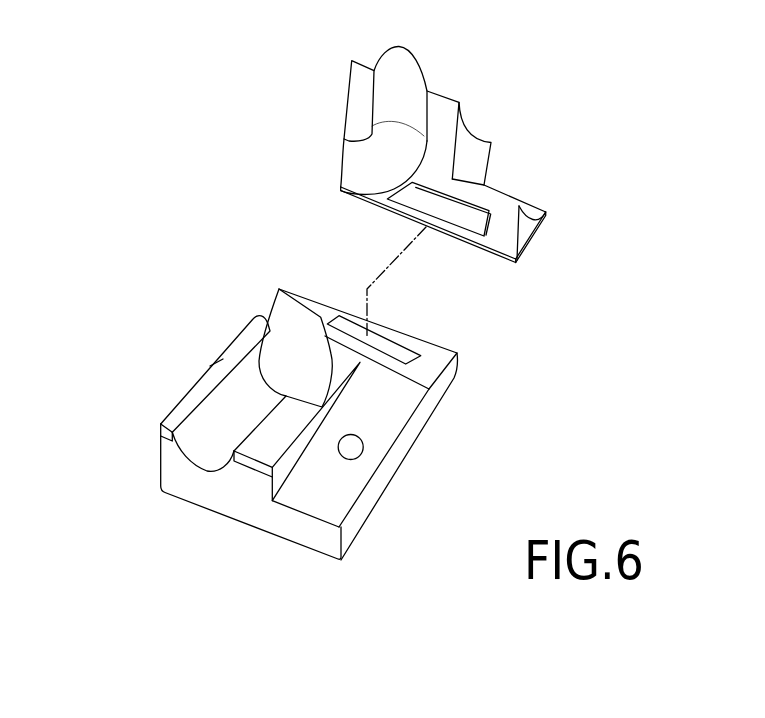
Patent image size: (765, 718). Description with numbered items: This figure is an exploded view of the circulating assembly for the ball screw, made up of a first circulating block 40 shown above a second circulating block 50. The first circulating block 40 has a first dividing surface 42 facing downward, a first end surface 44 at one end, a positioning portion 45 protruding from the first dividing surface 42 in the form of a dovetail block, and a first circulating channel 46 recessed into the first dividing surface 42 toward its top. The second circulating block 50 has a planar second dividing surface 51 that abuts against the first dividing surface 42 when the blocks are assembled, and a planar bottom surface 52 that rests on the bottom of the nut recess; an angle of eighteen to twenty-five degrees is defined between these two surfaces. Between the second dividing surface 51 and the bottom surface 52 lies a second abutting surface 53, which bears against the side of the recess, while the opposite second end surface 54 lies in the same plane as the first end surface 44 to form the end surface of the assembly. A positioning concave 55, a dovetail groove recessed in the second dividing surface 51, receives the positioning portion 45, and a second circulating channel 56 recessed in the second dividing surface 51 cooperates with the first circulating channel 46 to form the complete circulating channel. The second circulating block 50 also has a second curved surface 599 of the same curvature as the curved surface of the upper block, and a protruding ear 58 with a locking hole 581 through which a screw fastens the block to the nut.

The first circulating block 40 is at (473, 172).
The first dividing surface 42 is at (445, 111).
The first end surface 44 is at (535, 224).
The positioning portion 45 is at (463, 221).
The first circulating channel 46 is at (408, 78).
The second circulating block 50 is at (313, 420).
The second dividing surface 51 is at (435, 357).
The bottom surface 52 is at (393, 493).
The second abutting surface 53 is at (162, 458).
The second end surface 54 is at (359, 524).
The positioning concave 55 is at (342, 333).
The second circulating channel 56 is at (205, 430).
The protruding ear 58 is at (310, 498).
The locking hole 581 is at (352, 448).
The second curved surface 599 is at (205, 383).